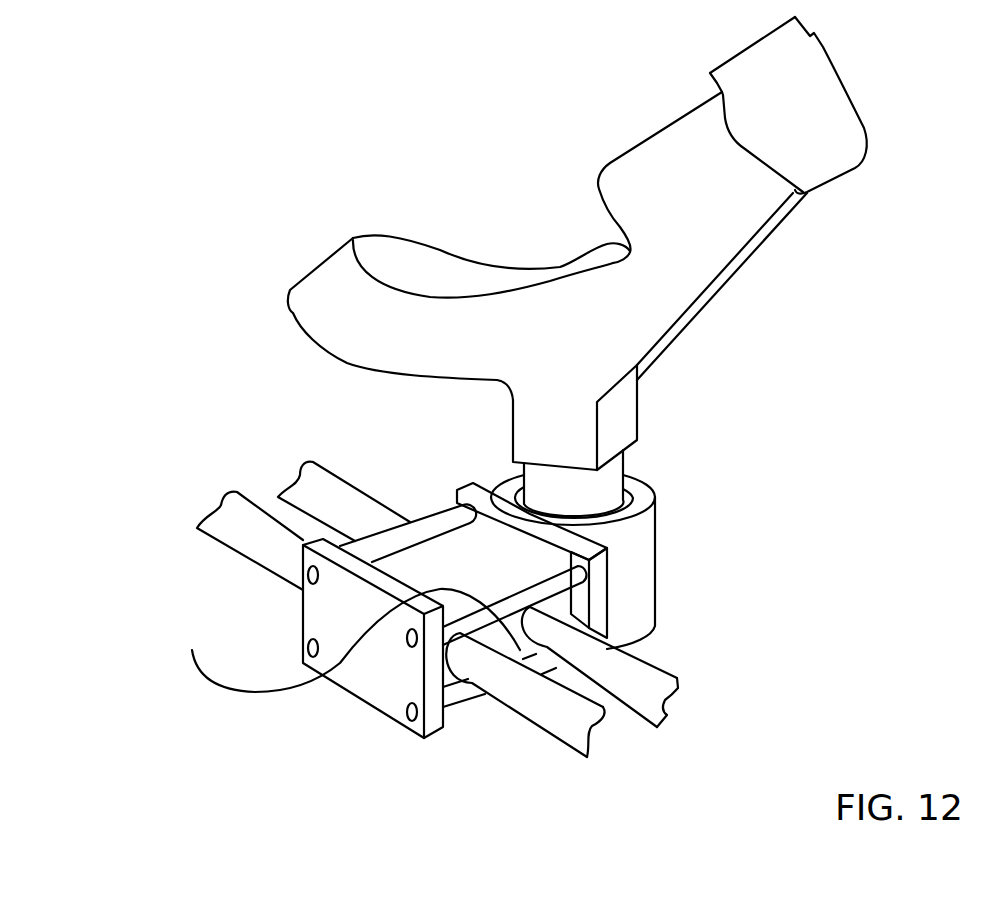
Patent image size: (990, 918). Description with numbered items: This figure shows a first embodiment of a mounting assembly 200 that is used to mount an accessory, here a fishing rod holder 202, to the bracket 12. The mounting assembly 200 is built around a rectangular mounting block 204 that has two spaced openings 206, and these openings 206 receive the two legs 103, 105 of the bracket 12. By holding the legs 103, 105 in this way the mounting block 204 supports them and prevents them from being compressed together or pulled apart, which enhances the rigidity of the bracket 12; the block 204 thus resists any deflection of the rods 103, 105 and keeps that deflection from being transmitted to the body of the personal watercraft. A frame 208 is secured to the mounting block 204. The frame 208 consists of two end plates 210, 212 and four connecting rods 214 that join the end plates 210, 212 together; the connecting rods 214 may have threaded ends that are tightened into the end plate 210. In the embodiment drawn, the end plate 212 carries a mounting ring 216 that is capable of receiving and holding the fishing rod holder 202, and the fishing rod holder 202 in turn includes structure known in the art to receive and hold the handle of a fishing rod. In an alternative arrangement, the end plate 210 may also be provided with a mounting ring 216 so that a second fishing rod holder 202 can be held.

The bracket 12 is at (150, 528).
The leg 103 is at (635, 673).
The leg 105 is at (533, 705).
The mounting assembly 200 is at (703, 506).
The fishing rod holder 202 is at (713, 245).
The mounting block 204 is at (450, 563).
The opening 206 is at (480, 690).
The frame 208 is at (265, 602).
The end plate 210 is at (368, 680).
The end plate 212 is at (603, 585).
The connecting rod 214 is at (340, 546).
The mounting ring 216 is at (640, 493).